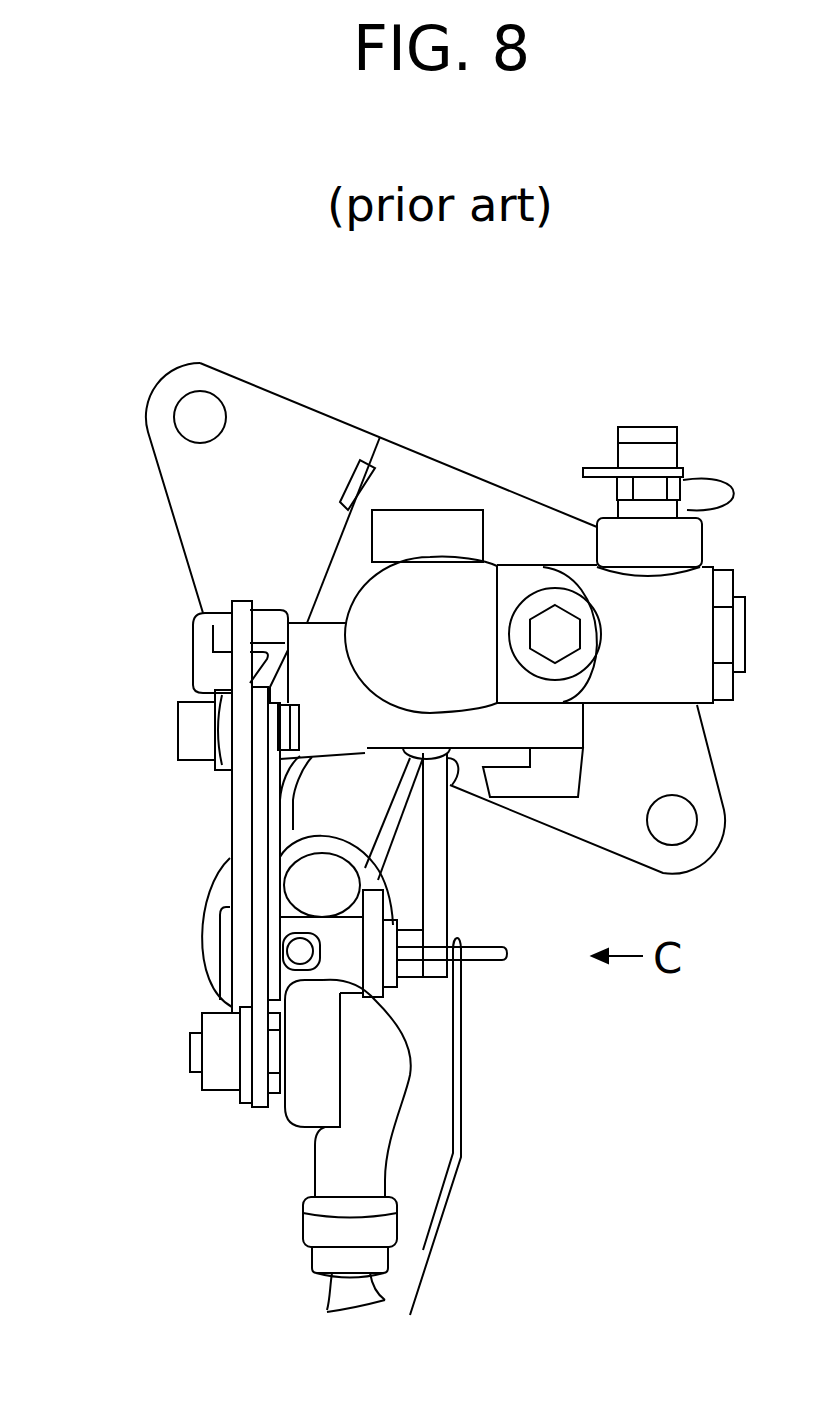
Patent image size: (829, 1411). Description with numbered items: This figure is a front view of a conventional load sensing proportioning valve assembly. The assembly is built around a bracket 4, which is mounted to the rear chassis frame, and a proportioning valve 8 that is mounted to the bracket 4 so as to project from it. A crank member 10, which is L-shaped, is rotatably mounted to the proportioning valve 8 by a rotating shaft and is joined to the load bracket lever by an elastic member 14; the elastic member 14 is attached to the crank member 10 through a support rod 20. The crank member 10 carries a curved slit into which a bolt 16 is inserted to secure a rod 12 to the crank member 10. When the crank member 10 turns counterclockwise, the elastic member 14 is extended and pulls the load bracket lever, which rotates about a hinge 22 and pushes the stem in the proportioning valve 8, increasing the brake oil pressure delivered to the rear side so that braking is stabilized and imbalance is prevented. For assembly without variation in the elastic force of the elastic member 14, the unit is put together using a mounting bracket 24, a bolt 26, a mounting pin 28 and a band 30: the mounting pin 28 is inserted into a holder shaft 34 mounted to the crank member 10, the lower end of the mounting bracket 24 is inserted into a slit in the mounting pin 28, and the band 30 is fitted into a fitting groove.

The bracket 4 is at (372, 440).
The proportioning valve 8 is at (483, 560).
The crank member 10 is at (240, 826).
The rod 12 is at (258, 1077).
The elastic member 14 is at (207, 917).
The bolt 16 is at (200, 738).
The support rod 20 is at (300, 952).
The hinge 22 is at (362, 458).
The mounting bracket 24 is at (438, 880).
The bolt 26 is at (563, 777).
The mounting pin 28 is at (490, 958).
The band 30 is at (448, 1187).
The holder shaft 34 is at (353, 937).